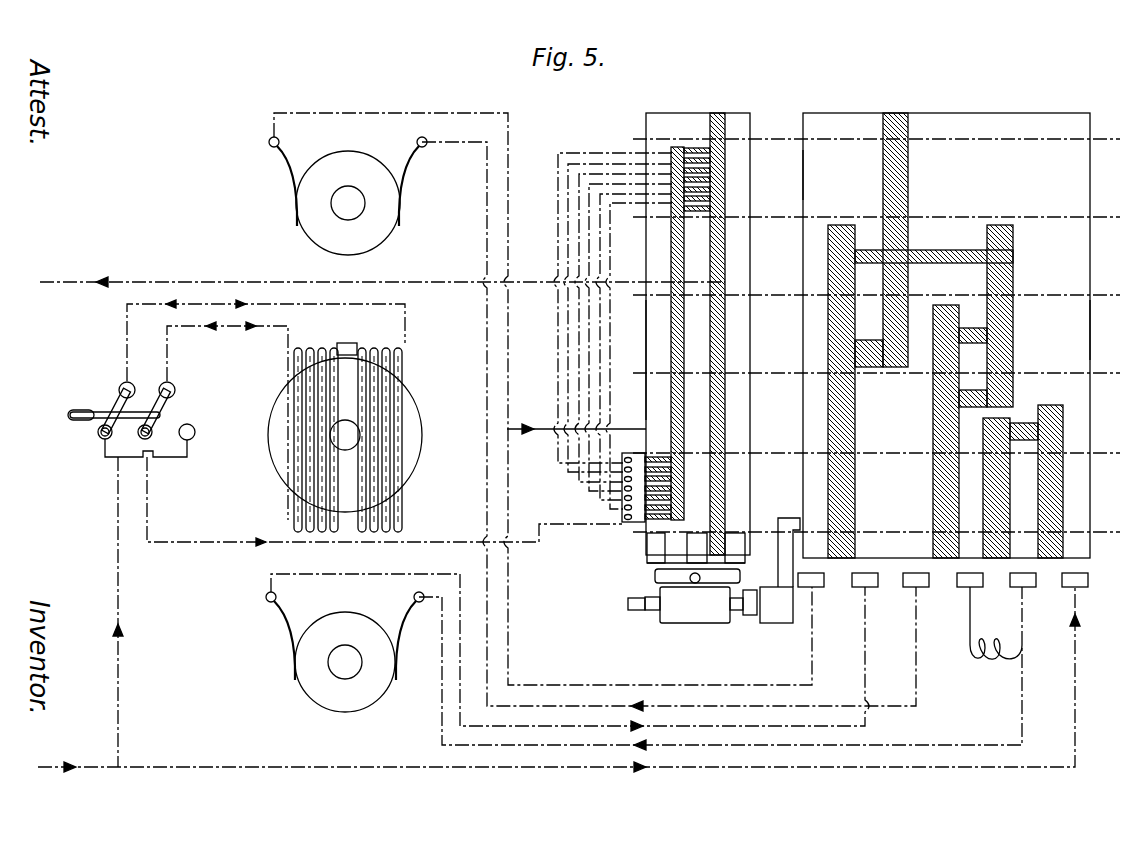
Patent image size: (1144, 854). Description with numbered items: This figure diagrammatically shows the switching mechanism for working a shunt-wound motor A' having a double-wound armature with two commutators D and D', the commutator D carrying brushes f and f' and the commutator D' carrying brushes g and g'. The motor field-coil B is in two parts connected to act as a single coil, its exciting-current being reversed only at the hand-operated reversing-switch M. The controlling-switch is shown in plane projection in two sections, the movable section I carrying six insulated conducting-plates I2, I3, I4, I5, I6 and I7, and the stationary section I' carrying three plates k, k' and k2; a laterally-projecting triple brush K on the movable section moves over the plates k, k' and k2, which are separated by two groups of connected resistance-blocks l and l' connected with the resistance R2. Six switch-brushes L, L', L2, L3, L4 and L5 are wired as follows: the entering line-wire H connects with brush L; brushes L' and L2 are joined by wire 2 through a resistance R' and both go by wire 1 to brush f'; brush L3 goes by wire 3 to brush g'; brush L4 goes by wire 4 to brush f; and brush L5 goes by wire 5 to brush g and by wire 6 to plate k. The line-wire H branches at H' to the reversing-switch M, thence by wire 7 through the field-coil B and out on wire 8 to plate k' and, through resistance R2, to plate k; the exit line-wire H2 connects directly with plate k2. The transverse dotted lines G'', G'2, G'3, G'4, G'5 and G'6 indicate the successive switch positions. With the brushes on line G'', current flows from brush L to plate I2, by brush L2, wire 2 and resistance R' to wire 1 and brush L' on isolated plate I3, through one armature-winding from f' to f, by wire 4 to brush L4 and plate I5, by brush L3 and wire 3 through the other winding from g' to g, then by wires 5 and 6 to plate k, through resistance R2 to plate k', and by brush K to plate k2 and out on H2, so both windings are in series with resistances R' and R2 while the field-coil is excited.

The commutator D' is at (348, 203).
The commutator-brush g is at (283, 181).
The commutator-brush g' is at (413, 181).
The commutator D is at (345, 662).
The commutator-brush f is at (278, 636).
The commutator-brush f' is at (410, 636).
The motor A' is at (333, 435).
The motor field-coil B is at (348, 426).
The hand-operated reversing-switch M is at (131, 417).
The wire 7 is at (266, 340).
The wire 8 is at (384, 434).
The exit line-wire H2 is at (382, 273).
The branch of line-wire H' is at (126, 612).
The entering line-wire H is at (559, 679).
The wire 5 is at (543, 399).
The wire 3 is at (669, 426).
The wire 4 is at (574, 654).
The wire 1 is at (720, 668).
The wire 6 is at (576, 420).
The wire 2 is at (961, 616).
The resistance R' is at (996, 663).
The resistance R2 is at (595, 487).
The stationary switch-section I' is at (698, 322).
The plate k is at (653, 360).
The plate k' is at (687, 333).
The plate k2 is at (726, 334).
The resistance-blocks l' is at (726, 179).
The resistance-blocks l is at (638, 508).
The position line G'6 is at (878, 130).
The position line G'5 is at (878, 208).
The position line G'4 is at (878, 286).
The position line G'3 is at (878, 364).
The position line G'2 is at (878, 444).
The position line G'' is at (876, 523).
The movable switch-section I is at (946, 323).
The conducting-plate I7 is at (820, 175).
The conducting-plate I2 is at (1064, 330).
The conducting-plate I6 is at (920, 335).
The conducting-plate I5 is at (973, 391).
The conducting-plate I4 is at (973, 367).
The conducting-plate I3 is at (1023, 481).
The switch-brush L5 is at (816, 591).
The switch-brush L4 is at (871, 591).
The switch-brush L3 is at (923, 591).
The switch-brush L2 is at (977, 591).
The switch-brush L' is at (1029, 591).
The switch-brush L is at (1080, 587).
The triple brush K is at (713, 570).